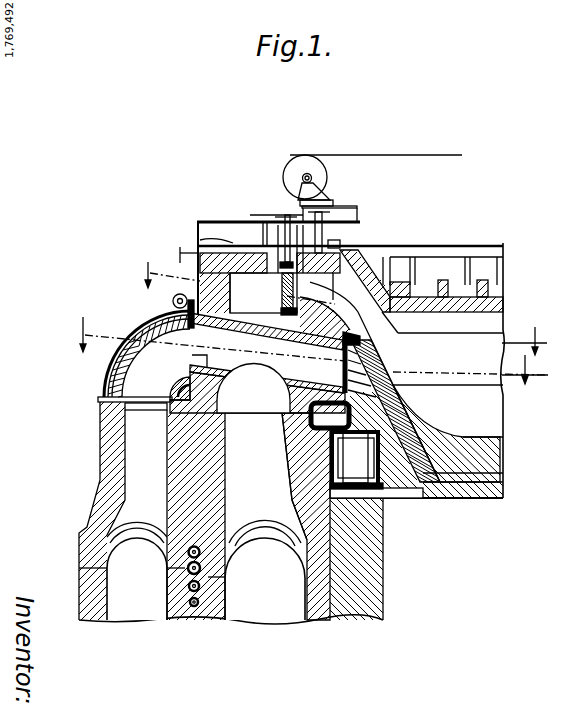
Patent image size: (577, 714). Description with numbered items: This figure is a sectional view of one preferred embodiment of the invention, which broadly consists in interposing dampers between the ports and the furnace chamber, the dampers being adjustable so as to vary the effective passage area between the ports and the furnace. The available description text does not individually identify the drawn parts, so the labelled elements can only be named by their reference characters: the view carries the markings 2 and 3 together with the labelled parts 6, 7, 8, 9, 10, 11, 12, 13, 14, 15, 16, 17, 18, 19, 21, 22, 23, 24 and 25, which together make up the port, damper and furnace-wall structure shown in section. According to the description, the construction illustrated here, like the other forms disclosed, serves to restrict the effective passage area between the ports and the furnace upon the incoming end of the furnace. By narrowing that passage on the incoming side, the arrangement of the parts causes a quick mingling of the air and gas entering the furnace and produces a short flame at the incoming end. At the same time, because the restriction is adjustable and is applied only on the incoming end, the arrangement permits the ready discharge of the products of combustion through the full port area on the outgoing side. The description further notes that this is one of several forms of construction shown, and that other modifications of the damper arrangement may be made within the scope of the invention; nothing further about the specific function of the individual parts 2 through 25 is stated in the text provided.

The section line 2- 2 is at (347, 309).
The section line 3- 3 is at (318, 350).
The inclined passage 6 is at (392, 375).
The casing wall 7 is at (482, 430).
The chamber 8 is at (352, 320).
The housing 9 is at (281, 295).
The cylinder bore 10 is at (266, 516).
The combustion chamber 11 is at (265, 570).
The combustion chamber 12 is at (137, 571).
The cylinder bore 13 is at (137, 511).
The elbow 14 is at (148, 333).
The tube 15 is at (265, 346).
The flange 16 is at (110, 386).
The elbow wall 17 is at (117, 370).
The port 18 is at (250, 400).
The inner flange 19 is at (205, 357).
The inclined wall 21 is at (362, 258).
The frame 22 is at (347, 243).
The bracket 23 is at (200, 240).
The lever arm 24 is at (288, 200).
The pulley 25 is at (307, 165).